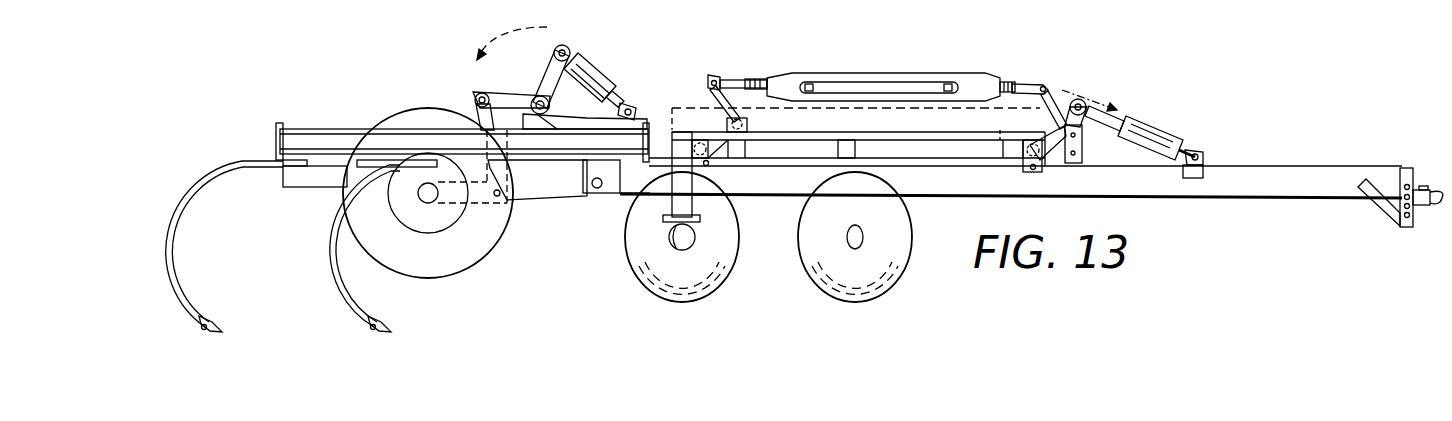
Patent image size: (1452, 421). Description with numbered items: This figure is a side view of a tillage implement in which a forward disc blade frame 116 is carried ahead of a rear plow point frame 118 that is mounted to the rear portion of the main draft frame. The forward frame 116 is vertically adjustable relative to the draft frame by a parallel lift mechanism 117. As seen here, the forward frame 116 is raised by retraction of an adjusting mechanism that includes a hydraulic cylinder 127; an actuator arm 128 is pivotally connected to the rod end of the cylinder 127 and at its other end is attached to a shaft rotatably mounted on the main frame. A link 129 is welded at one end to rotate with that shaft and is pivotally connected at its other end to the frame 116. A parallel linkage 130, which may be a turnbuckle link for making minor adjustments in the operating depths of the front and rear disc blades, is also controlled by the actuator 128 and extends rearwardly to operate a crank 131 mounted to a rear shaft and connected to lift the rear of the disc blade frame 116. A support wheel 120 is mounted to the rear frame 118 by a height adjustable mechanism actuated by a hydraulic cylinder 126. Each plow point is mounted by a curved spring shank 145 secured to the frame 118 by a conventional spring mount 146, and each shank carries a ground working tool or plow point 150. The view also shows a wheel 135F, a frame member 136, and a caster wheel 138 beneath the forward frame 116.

The forward disc blade frame 116 is at (913, 122).
The parallel lift mechanism 117 is at (1090, 90).
The plow point frame 118 is at (311, 122).
The support wheel 120 is at (456, 272).
The hydraulic cylinder 126 is at (615, 60).
The hydraulic cylinder 127 is at (1155, 137).
The actuator arm 128 is at (1085, 128).
The link 129 is at (1047, 135).
The parallel linkage 130 is at (862, 68).
The crank 131 is at (745, 105).
The front wheel 135F is at (841, 303).
The frame post 136 is at (842, 147).
The caster wheel 138 is at (690, 130).
The curved spring shank 145 is at (198, 187).
The spring mount 146 is at (297, 178).
The plow point 150 is at (206, 308).